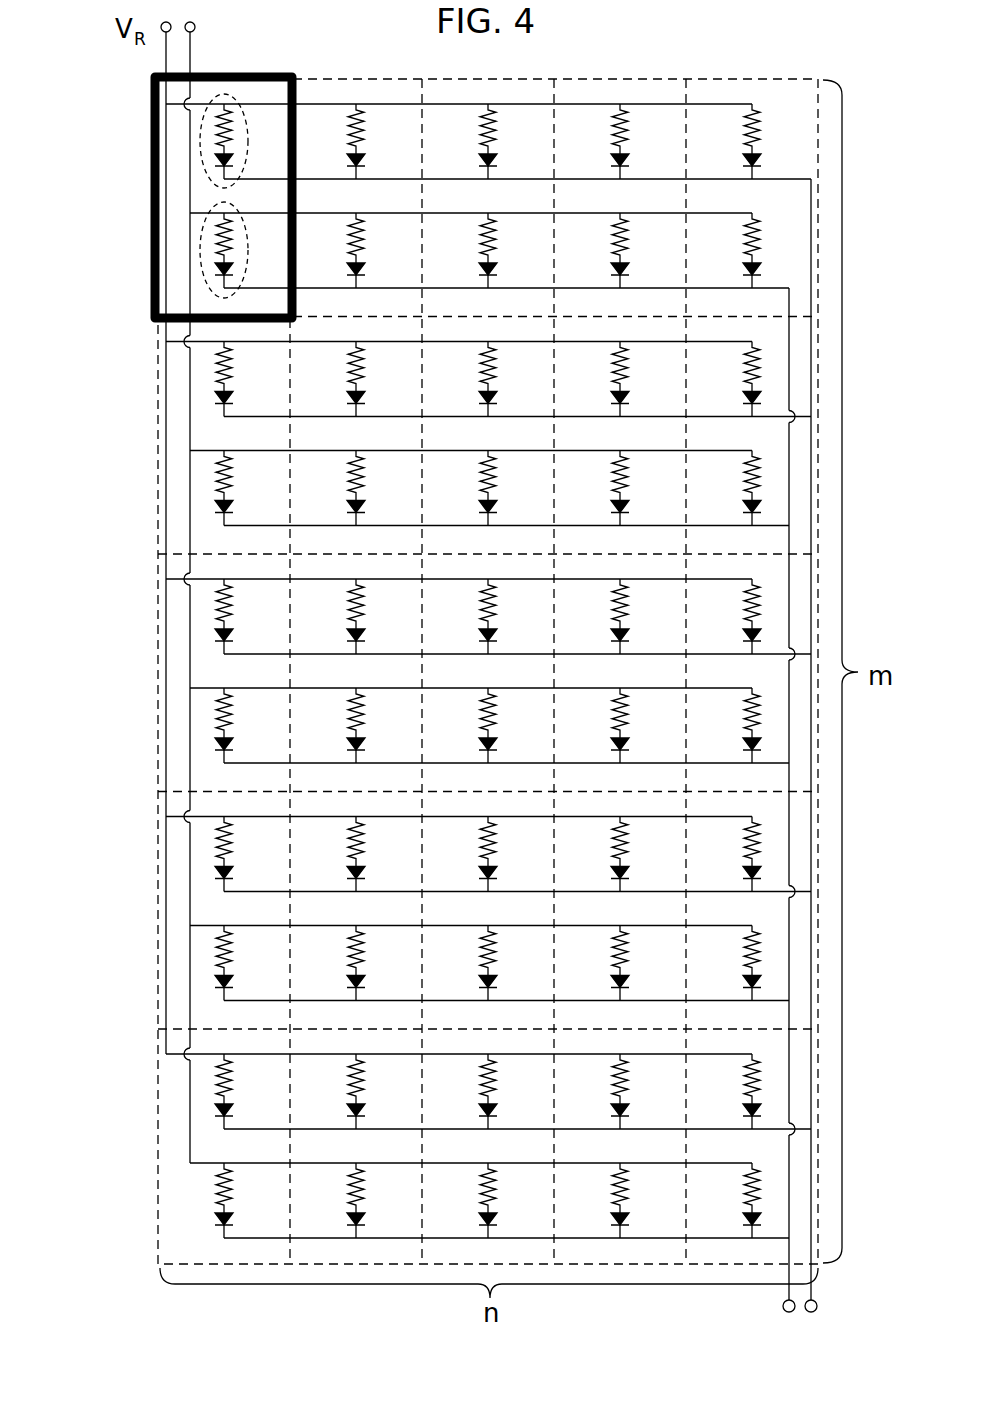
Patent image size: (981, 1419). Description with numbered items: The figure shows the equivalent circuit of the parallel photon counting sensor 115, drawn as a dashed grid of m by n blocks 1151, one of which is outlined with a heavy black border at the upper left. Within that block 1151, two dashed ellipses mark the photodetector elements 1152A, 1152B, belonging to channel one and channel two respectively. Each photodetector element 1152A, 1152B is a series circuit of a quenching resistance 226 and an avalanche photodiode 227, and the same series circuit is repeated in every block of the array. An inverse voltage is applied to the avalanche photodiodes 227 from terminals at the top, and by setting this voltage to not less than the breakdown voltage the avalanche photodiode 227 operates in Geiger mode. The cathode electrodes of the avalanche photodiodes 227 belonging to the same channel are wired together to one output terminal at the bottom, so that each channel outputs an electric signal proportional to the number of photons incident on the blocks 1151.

The parallel photon counting sensor 115 is at (767, 79).
The block 1151 is at (150, 98).
The photodetector element 1152A is at (205, 171).
The photodetector element 1152B is at (205, 282).
The quenching resistance 226 is at (758, 478).
The avalanche photodiode 227 is at (758, 506).